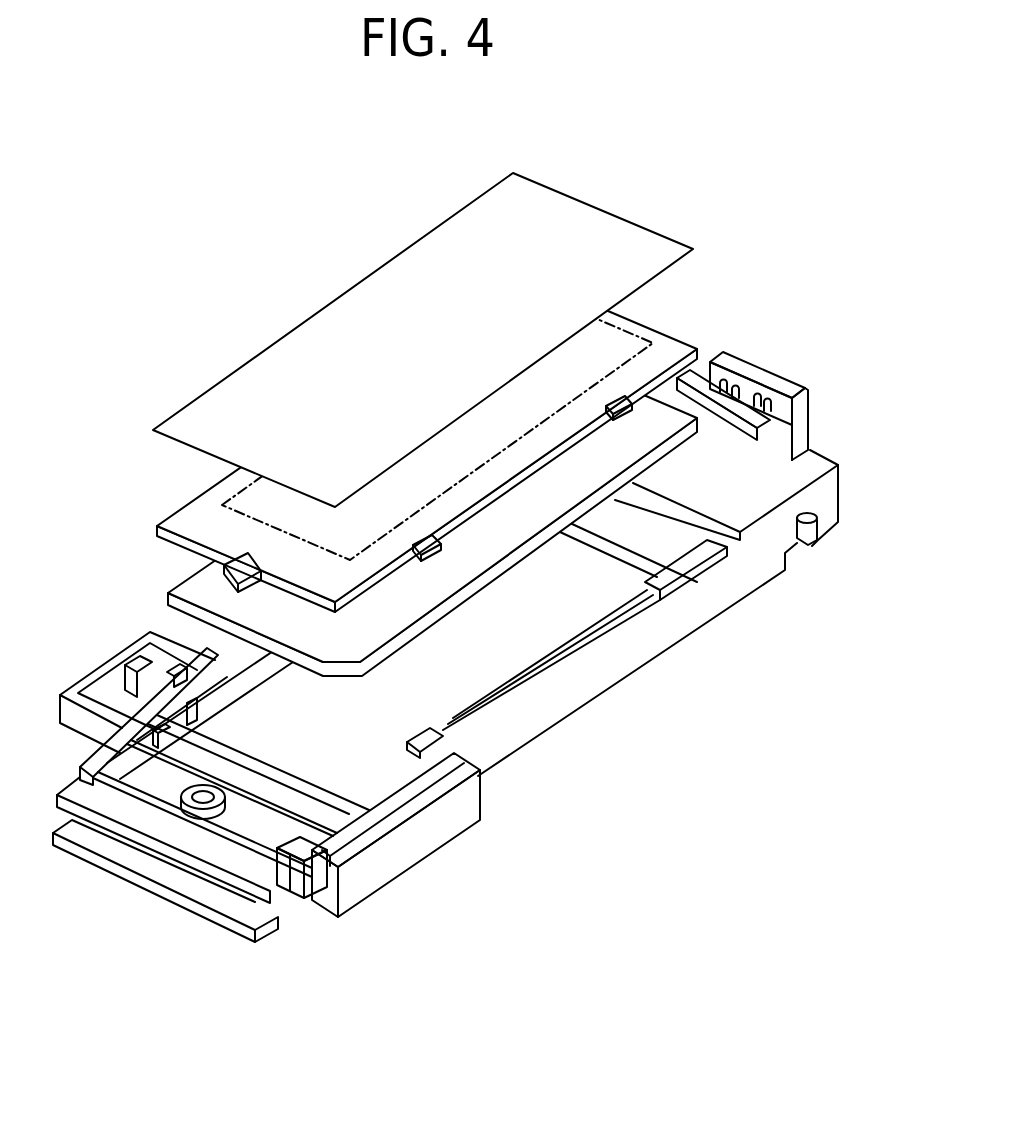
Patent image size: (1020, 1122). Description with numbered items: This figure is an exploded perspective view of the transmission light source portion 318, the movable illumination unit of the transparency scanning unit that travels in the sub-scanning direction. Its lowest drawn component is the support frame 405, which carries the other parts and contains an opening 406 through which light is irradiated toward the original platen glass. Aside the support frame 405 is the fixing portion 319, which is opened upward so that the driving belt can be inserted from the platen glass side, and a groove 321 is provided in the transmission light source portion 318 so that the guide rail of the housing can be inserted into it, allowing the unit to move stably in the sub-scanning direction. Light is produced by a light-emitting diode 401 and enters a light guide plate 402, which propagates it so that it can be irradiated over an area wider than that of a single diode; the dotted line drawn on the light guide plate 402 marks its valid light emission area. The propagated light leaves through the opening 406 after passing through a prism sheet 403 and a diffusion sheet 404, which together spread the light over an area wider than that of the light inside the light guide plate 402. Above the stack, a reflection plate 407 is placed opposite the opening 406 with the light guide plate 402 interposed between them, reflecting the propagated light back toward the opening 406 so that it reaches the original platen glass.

The transmission light source portion 318 is at (114, 300).
The fixing portion 319 is at (778, 415).
The groove 321 is at (793, 522).
The light-emitting diode (LED) 401 is at (240, 567).
The light guide plate 402 is at (672, 338).
The prism sheet 403 is at (497, 535).
The diffusion sheet 404 is at (497, 575).
The support frame 405 is at (490, 748).
The opening 406 is at (308, 765).
The reflection plate 407 is at (598, 204).